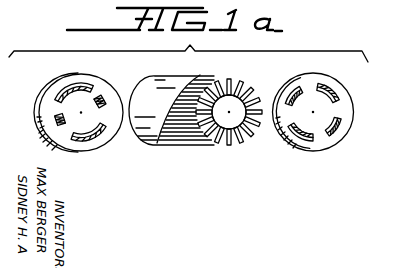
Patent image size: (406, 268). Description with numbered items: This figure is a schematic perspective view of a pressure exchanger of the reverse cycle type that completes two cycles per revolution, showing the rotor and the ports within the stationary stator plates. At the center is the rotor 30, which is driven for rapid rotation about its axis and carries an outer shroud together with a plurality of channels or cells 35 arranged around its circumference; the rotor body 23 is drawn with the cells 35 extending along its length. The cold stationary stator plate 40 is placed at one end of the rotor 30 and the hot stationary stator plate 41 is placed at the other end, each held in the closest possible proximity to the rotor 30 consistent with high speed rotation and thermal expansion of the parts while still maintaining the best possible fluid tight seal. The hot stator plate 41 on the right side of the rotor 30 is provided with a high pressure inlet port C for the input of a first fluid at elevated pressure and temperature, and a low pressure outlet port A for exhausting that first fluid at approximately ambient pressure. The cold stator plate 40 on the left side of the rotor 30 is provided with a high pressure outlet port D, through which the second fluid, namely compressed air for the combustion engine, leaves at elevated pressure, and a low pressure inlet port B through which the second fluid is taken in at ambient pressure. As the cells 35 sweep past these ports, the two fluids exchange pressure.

The low pressure inlet port B is at (88, 138).
The high pressure outlet port D is at (55, 120).
The cold stationary stator plate 40 is at (80, 151).
The rotor body 23 is at (186, 77).
The channels or cells 35 is at (185, 133).
The rotor 30 is at (230, 146).
The low pressure outlet port A is at (303, 131).
The high pressure inlet port C is at (339, 125).
The hot stationary stator plate 41 is at (333, 146).